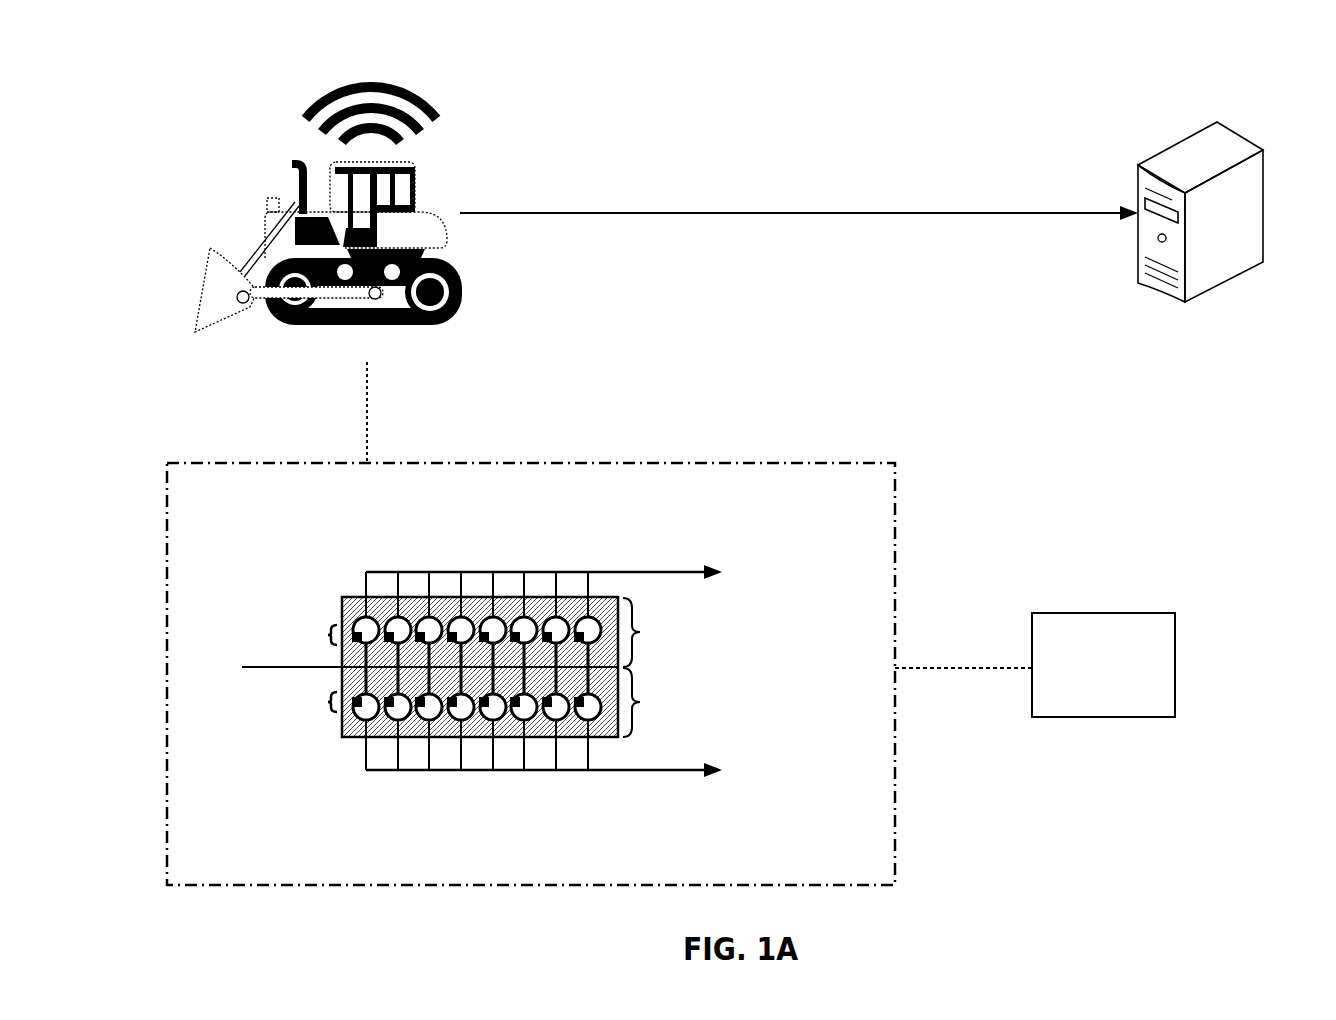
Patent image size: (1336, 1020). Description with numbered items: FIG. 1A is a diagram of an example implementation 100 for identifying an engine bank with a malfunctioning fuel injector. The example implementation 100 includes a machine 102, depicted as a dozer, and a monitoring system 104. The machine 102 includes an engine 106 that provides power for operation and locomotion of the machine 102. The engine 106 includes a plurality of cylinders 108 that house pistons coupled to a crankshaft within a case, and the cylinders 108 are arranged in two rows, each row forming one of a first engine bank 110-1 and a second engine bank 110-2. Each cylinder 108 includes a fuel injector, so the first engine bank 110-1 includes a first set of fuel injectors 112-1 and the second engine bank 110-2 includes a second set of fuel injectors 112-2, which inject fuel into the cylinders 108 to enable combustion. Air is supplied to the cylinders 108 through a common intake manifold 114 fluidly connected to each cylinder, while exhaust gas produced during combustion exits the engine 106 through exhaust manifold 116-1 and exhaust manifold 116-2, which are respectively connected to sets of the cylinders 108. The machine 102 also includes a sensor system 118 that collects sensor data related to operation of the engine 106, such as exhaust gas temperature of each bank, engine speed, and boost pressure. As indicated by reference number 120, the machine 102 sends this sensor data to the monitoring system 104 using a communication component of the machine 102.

The example implementation 100 is at (250, 65).
The machine 102 is at (328, 222).
The monitoring system 104 is at (1205, 229).
The engine 106 is at (531, 660).
The cylinders 108 is at (357, 616).
The first engine bank 110-1 is at (732, 632).
The second engine bank 110-2 is at (732, 702).
The first set of fuel injectors 112-1 is at (314, 626).
The second set of fuel injectors 112-2 is at (316, 711).
The intake manifold 114 is at (396, 692).
The exhaust manifold 116-1 is at (570, 570).
The exhaust manifold 116-2 is at (622, 770).
The sensor system 118 is at (1123, 704).
The sending sensor data 120 is at (799, 239).